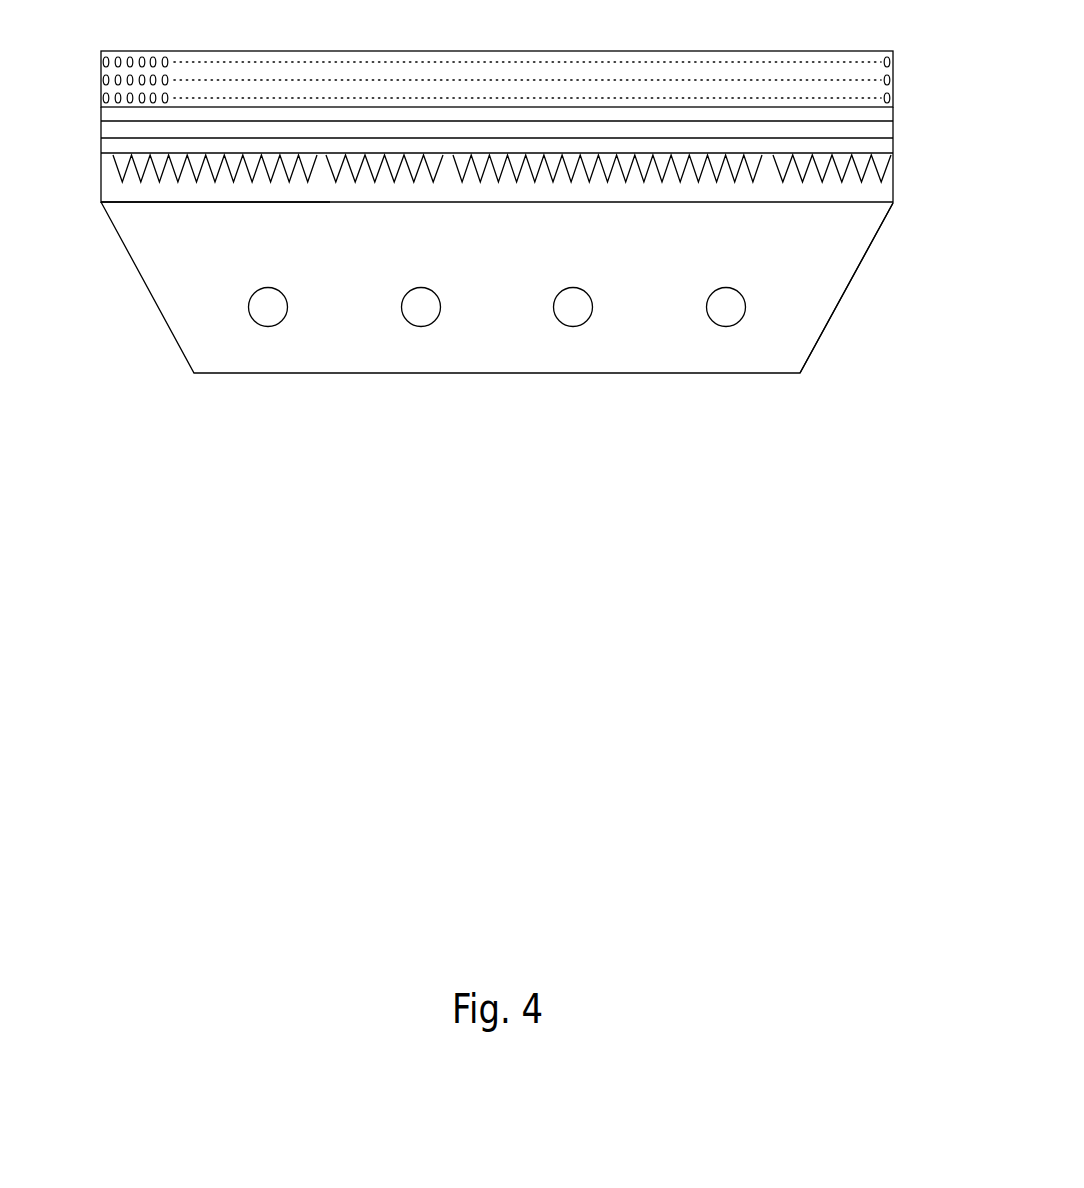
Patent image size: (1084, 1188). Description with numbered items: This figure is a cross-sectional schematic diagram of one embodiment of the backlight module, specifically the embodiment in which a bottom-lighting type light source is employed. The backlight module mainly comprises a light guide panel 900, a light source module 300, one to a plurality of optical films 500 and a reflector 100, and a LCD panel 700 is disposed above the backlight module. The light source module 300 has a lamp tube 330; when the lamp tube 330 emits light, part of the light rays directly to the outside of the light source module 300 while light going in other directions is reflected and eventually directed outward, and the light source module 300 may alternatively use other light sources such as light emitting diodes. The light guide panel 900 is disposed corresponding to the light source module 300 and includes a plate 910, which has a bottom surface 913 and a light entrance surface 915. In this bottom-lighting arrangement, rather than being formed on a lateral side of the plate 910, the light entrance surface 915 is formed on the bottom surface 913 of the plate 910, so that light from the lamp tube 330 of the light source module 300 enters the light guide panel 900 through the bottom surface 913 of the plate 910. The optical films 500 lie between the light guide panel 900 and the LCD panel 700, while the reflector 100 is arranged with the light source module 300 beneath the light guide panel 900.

The reflector 100 is at (167, 332).
The light source module 300 is at (835, 315).
The lamp tube 330 is at (268, 307).
The optical films 500 is at (894, 127).
The LCD panel 700 is at (894, 71).
The light guide panel 900 is at (882, 190).
The plate 910 is at (112, 193).
The bottom surface 913 is at (345, 203).
The light entrance surface 915 is at (165, 202).